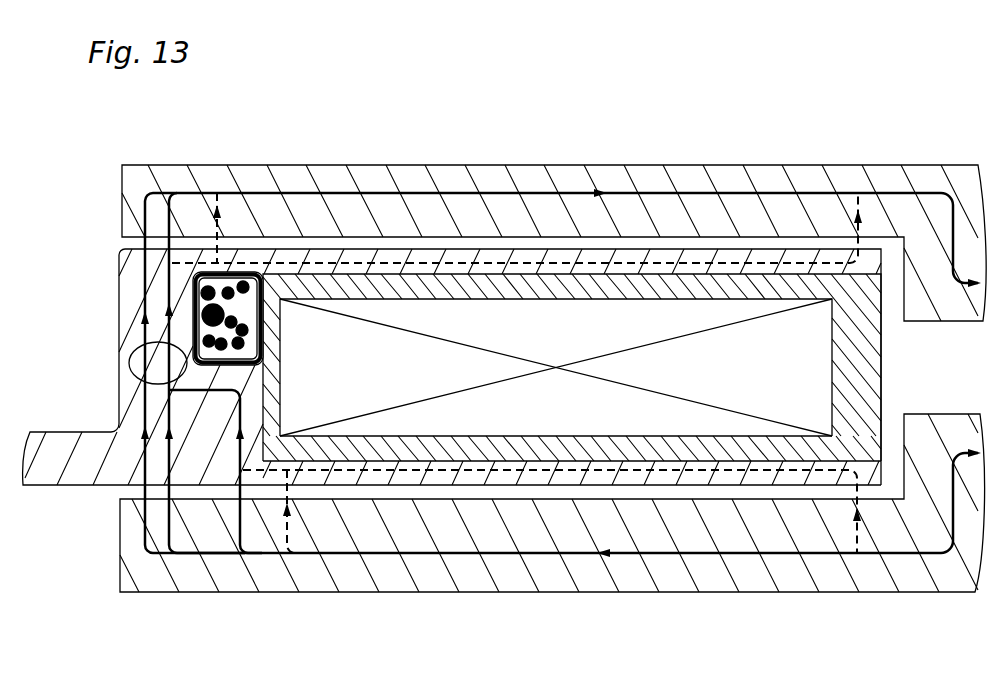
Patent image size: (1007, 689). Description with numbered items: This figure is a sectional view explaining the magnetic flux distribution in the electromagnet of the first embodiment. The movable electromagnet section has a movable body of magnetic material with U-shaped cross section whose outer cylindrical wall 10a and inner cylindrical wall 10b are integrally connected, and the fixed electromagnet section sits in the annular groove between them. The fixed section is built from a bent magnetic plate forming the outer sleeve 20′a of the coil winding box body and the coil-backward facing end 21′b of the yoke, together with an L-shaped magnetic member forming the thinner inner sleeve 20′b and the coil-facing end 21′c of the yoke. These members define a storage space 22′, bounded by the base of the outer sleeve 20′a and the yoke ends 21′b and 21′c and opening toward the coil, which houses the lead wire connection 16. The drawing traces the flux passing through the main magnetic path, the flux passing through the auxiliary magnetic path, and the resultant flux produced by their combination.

The outer cylindrical wall 10a is at (238, 170).
The inner cylindrical wall 10b is at (460, 575).
The lead wire connection 16 is at (240, 278).
The outer sleeve of coil winding box body 20′a is at (432, 257).
The inner sleeve of coil winding box body 20′b is at (345, 475).
The coil-backward facing end of yoke 21′b is at (132, 288).
The coil-facing end of yoke 21′c is at (193, 467).
The storage space 22′ is at (195, 345).